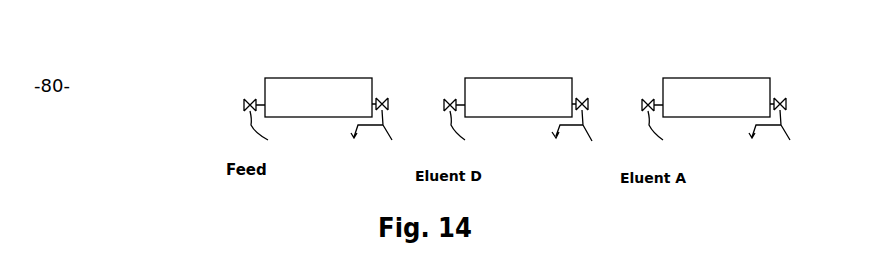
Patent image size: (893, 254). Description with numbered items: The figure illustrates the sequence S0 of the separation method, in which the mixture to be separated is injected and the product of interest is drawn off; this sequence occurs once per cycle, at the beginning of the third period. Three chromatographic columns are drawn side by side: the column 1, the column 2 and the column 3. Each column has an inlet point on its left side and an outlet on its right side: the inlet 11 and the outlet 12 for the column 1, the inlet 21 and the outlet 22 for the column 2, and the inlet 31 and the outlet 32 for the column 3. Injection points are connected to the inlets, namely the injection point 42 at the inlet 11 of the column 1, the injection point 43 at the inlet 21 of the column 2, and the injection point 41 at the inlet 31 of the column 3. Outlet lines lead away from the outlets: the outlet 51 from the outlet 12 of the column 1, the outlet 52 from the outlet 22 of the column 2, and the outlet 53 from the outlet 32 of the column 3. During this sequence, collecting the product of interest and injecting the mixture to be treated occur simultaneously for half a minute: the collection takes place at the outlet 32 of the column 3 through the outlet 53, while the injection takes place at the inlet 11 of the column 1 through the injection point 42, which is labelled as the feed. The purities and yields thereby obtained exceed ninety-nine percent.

The column 1 is at (320, 91).
The column 2 is at (518, 67).
The column 3 is at (716, 65).
The inlet point 11 is at (248, 95).
The outlet valve of first column 12 is at (384, 97).
The inlet point 21 is at (460, 66).
The outlet 22 is at (575, 62).
The inlet point 31 is at (659, 67).
The outlet 32 is at (771, 63).
The injection point 41 is at (672, 134).
The injection point 42 is at (271, 136).
The injection point 43 is at (470, 136).
The outlet 51 is at (382, 135).
The outlet 52 is at (581, 136).
The outlet 53 is at (782, 138).